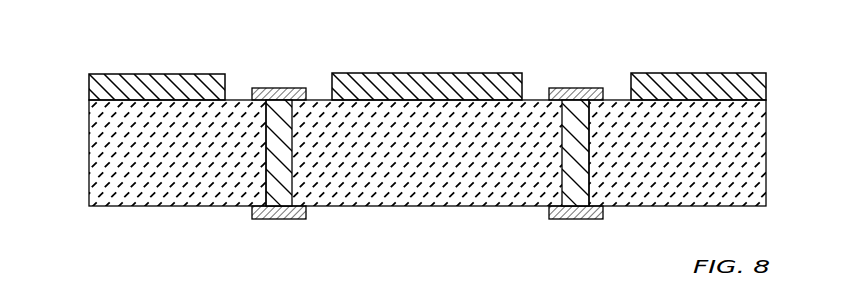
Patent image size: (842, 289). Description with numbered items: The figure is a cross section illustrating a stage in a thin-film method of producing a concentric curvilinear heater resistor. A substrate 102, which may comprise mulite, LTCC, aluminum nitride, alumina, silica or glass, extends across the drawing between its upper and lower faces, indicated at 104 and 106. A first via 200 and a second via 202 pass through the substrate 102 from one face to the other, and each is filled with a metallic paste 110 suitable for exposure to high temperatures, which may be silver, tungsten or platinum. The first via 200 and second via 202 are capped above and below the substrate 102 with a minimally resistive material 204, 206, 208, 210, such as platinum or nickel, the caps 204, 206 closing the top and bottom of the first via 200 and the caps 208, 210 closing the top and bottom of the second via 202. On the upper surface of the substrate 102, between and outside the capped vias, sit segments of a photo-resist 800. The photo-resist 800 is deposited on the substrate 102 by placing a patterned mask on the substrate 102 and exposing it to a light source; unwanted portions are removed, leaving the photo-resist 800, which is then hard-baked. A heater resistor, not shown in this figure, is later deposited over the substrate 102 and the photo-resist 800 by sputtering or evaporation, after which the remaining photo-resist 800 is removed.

The substrate 102 is at (88, 160).
The first side of substrate 104 is at (258, 143).
The second side of substrate 106 is at (598, 143).
The metallic paste 110 is at (293, 192).
The first via 200 is at (280, 165).
The second via 202 is at (558, 178).
The minimally resistive material 204 is at (268, 88).
The minimally resistive material 206 is at (278, 219).
The minimally resistive material 208 is at (563, 88).
The minimally resistive material 210 is at (577, 219).
The photo-resist 800 is at (125, 73).